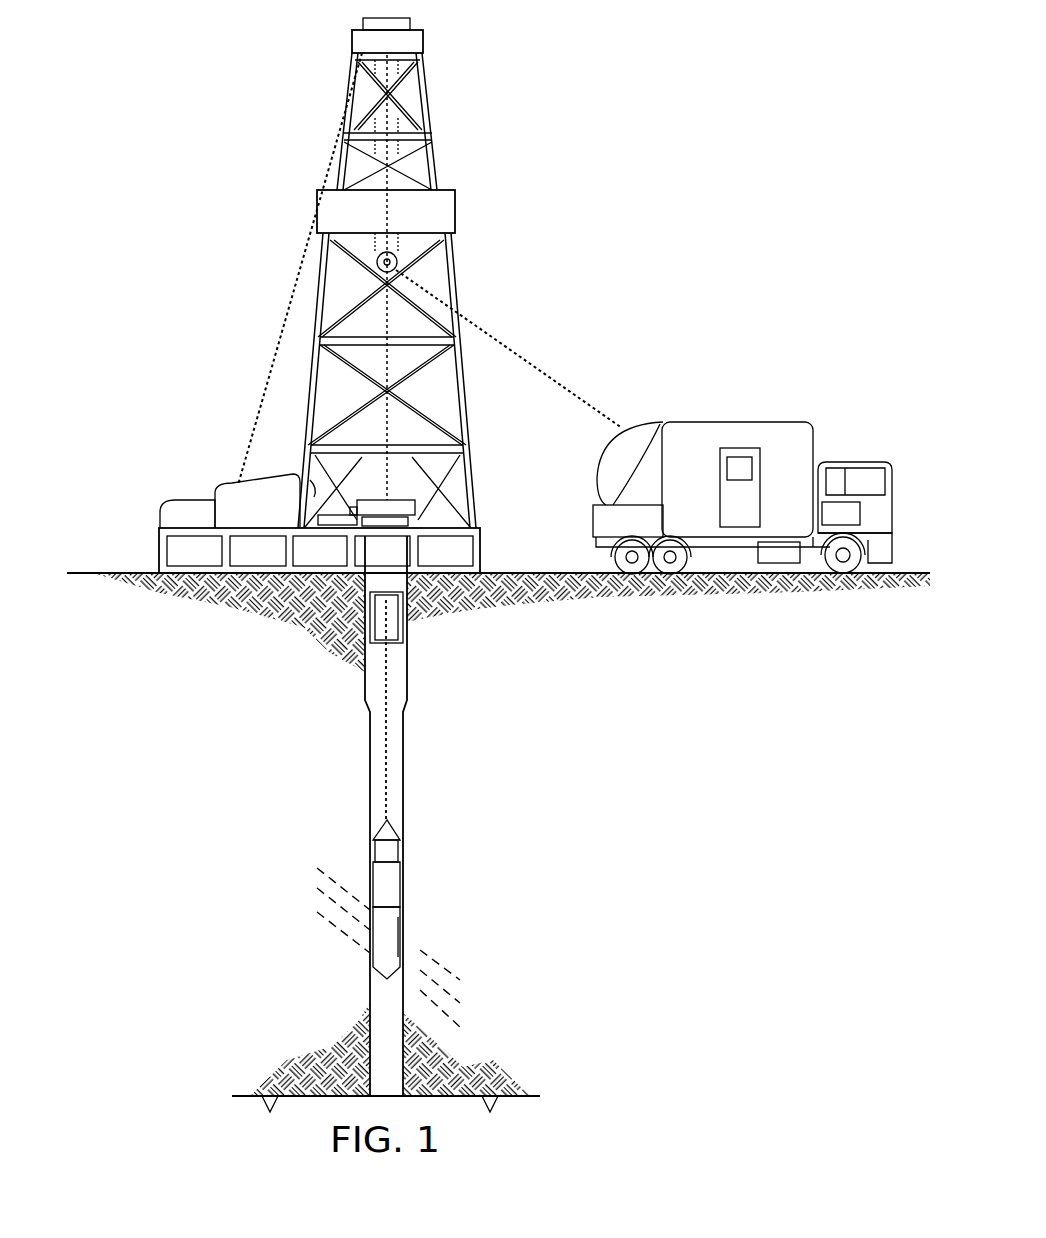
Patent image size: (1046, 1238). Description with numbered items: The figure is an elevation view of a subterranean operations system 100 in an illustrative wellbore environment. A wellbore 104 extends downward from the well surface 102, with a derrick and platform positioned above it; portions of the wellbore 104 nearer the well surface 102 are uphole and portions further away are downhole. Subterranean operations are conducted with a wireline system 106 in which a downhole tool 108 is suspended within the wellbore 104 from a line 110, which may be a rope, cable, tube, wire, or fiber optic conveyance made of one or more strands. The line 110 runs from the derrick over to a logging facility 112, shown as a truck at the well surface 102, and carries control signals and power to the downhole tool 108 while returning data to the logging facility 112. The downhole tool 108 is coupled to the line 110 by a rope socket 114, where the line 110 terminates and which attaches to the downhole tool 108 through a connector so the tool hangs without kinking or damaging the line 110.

The subterranean operations system 100 is at (624, 221).
The well surface 102 is at (110, 572).
The wellbore 104 is at (402, 683).
The wireline system 106 is at (381, 923).
The downhole tool 108 is at (410, 903).
The line 110 is at (385, 748).
The logging facility 112 is at (738, 422).
The rope socket 114 is at (410, 823).